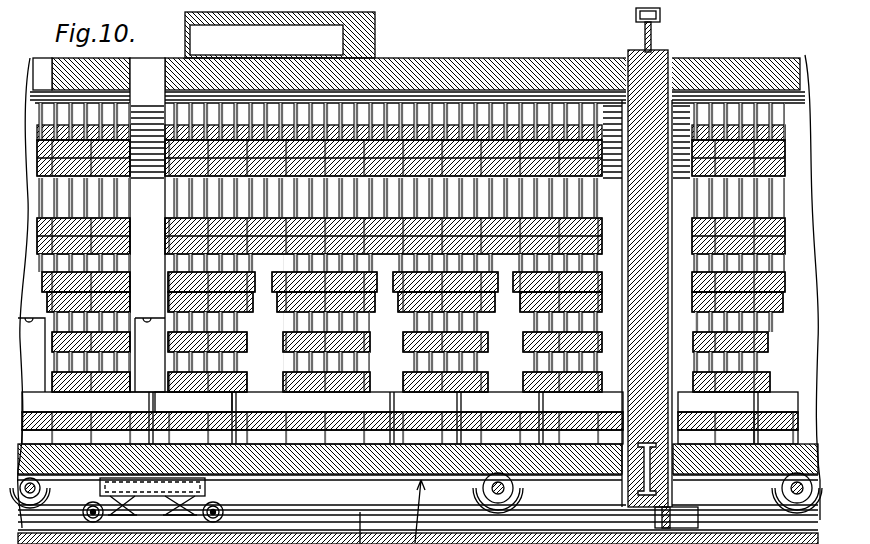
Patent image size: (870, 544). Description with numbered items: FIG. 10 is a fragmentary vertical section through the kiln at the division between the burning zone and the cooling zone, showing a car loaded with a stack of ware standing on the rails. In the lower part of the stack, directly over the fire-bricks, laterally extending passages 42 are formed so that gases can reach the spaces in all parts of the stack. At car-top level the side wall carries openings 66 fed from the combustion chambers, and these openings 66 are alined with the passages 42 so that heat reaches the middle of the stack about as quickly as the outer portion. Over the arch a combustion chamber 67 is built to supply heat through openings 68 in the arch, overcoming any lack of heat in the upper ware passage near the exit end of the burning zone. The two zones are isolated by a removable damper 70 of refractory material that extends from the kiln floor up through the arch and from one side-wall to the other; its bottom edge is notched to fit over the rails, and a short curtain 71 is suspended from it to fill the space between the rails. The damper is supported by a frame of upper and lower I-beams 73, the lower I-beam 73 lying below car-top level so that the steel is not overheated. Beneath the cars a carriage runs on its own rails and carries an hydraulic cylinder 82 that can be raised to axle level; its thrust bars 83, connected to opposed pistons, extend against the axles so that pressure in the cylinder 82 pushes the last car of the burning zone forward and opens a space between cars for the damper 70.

The laterally extending passages 42 is at (52, 348).
The openings 66 is at (28, 318).
The combustion chamber 67 is at (280, 35).
The openings in the arch 68 is at (42, 63).
The removable damper 70 is at (628, 240).
The short curtain 71 is at (670, 512).
The I-beams 73 is at (655, 30).
The hydraulic cylinder 82 is at (157, 483).
The thrust bars 83 is at (70, 488).